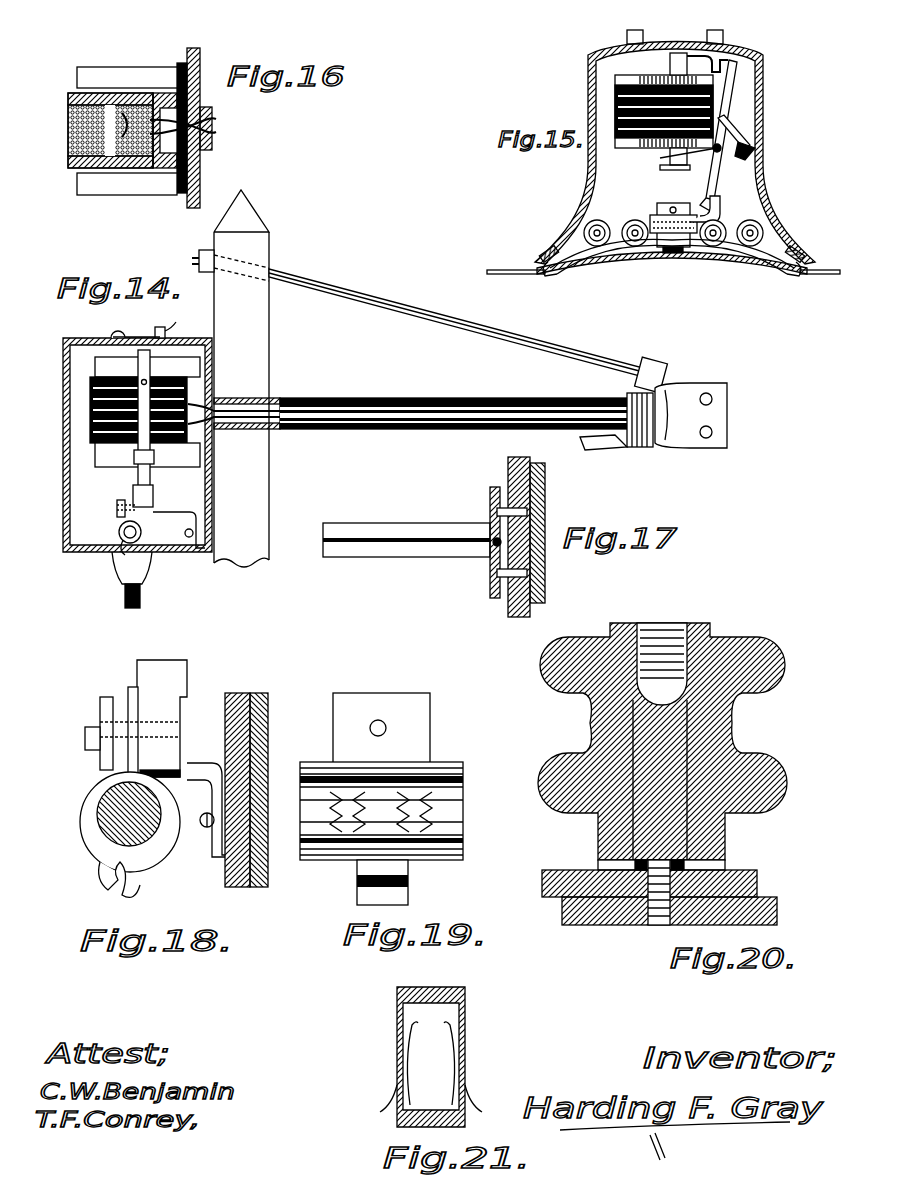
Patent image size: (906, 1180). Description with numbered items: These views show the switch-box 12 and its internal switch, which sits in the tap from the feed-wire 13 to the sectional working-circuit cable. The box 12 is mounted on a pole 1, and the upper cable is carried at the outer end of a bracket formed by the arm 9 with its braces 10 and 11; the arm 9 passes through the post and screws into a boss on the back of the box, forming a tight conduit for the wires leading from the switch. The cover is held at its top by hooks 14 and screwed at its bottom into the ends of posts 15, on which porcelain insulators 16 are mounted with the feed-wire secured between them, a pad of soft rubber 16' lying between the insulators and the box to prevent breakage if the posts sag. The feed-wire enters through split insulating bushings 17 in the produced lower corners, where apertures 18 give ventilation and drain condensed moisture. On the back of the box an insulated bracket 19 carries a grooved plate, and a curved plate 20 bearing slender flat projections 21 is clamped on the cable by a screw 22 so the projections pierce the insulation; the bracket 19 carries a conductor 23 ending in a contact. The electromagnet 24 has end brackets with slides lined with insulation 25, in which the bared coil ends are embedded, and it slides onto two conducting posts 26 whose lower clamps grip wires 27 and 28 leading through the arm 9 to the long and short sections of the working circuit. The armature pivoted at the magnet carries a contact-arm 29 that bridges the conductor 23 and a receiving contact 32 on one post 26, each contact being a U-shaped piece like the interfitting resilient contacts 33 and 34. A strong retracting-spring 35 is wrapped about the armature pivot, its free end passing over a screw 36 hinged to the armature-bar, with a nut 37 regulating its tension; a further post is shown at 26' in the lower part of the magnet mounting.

In FIG. 14, the pole 1 is at (265, 325).
In FIG. 14, the arm 9 is at (366, 400).
In FIG. 14, the brace 10 is at (392, 303).
In FIG. 14, the brace 11 is at (610, 455).
In FIG. 15, the switch-box 12 is at (675, 152).
In FIG. 14, the switch-box 12 is at (124, 473).
In FIG. 15, the feed-wire 13 is at (660, 260).
In FIG. 14, the hook 14 is at (143, 323).
In FIG. 20, the post 15 is at (701, 623).
In FIG. 15, the insulator 16 is at (673, 224).
In FIG. 20, the insulator 16 is at (662, 741).
In FIG. 20, the soft rubber 16' is at (659, 886).
In FIG. 15, the bushing 17 is at (676, 269).
In FIG. 15, the aperture 18 is at (672, 266).
In FIG. 14, the bracket 19 is at (179, 519).
In FIG. 18, the bracket 19 is at (206, 802).
In FIG. 15, the plate 20 is at (672, 219).
In FIG. 14, the plate 20 is at (119, 532).
In FIG. 18, the plate 20 is at (92, 782).
In FIG. 19, the plate 20 is at (381, 735).
In FIG. 18, the projection 21 is at (98, 813).
In FIG. 19, the projection 21 is at (463, 820).
In FIG. 14, the screw 22 is at (117, 505).
In FIG. 18, the screw 22 is at (85, 722).
In FIG. 15, the conductor 23 is at (714, 203).
In FIG. 14, the conductor 23 is at (153, 492).
In FIG. 18, the conductor 23 is at (175, 716).
In FIG. 16, the electromagnet 24 is at (68, 150).
In FIG. 15, the electromagnet 24 is at (672, 60).
In FIG. 16, the insulation 25 is at (77, 178).
In FIG. 15, the insulation 25 is at (670, 158).
In FIG. 16, the post 26 is at (127, 131).
In FIG. 15, the post 26 is at (675, 176).
In FIG. 14, the post 26 is at (138, 362).
In FIG. 17, the post 26 is at (405, 552).
In FIG. 14, the lower plate 26' is at (140, 464).
In FIG. 16, the wire 27 is at (212, 122).
In FIG. 14, the wire 27 is at (250, 402).
In FIG. 16, the wire 28 is at (212, 136).
In FIG. 14, the wire 28 is at (246, 421).
In FIG. 15, the contact-arm 29 is at (724, 110).
In FIG. 14, the contact-arm 29 is at (150, 380).
In FIG. 15, the contact 32 is at (707, 55).
In FIG. 21, the contact 33 is at (448, 1056).
In FIG. 21, the contact 34 is at (425, 1110).
In FIG. 15, the retracting-spring 35 is at (694, 159).
In FIG. 15, the screw 36 is at (737, 132).
In FIG. 15, the nut 37 is at (746, 160).